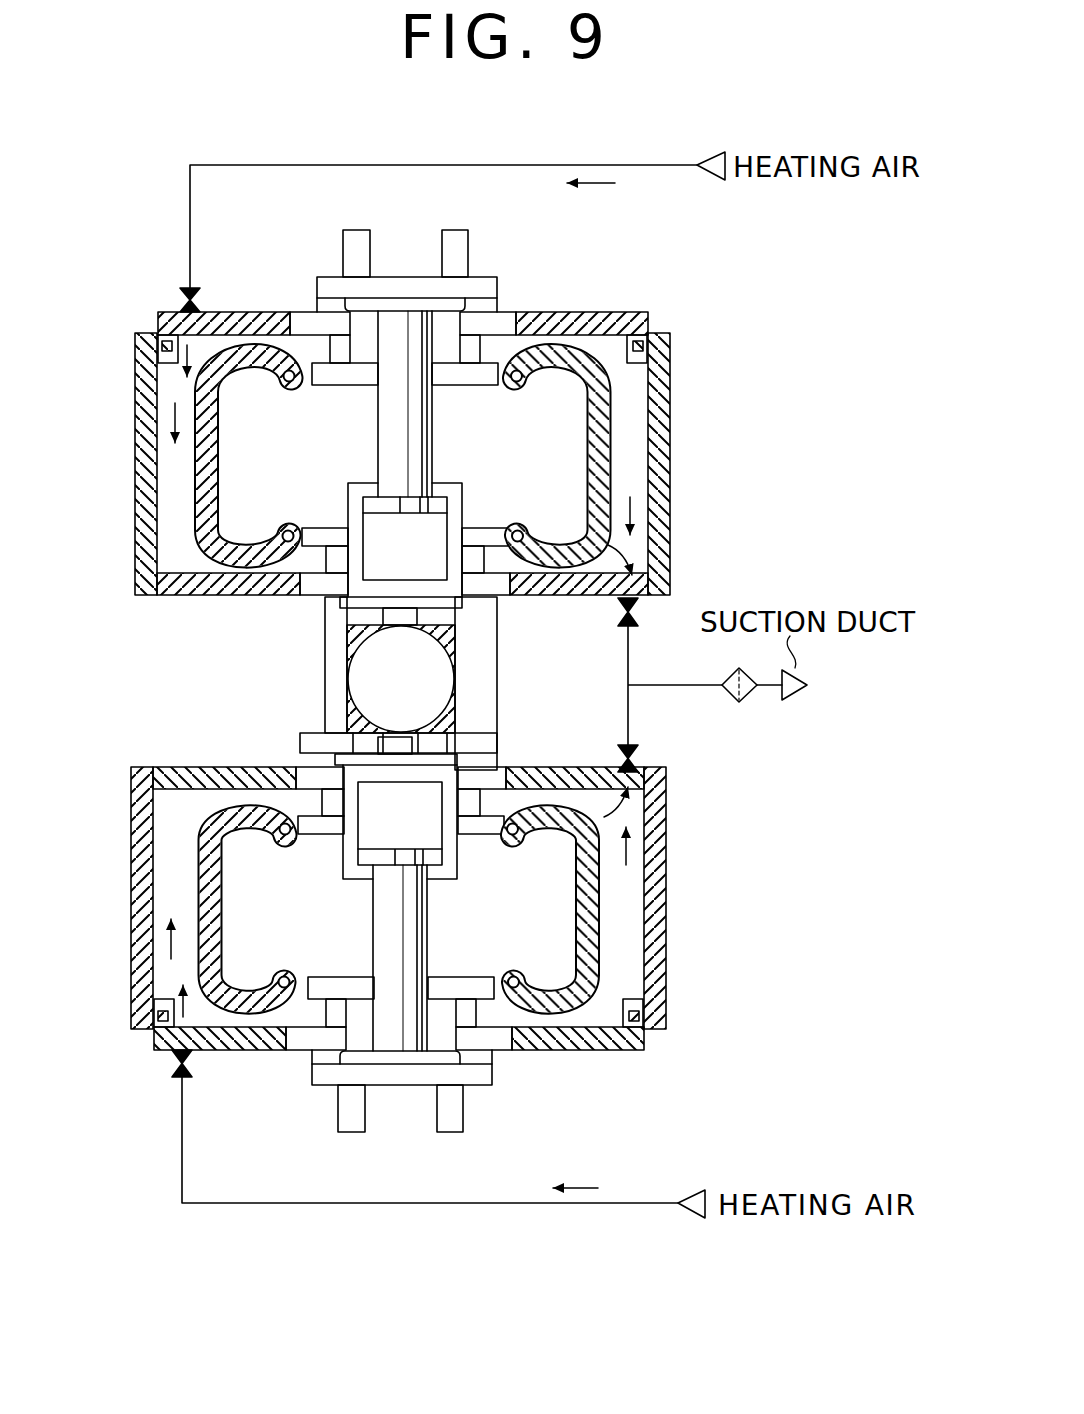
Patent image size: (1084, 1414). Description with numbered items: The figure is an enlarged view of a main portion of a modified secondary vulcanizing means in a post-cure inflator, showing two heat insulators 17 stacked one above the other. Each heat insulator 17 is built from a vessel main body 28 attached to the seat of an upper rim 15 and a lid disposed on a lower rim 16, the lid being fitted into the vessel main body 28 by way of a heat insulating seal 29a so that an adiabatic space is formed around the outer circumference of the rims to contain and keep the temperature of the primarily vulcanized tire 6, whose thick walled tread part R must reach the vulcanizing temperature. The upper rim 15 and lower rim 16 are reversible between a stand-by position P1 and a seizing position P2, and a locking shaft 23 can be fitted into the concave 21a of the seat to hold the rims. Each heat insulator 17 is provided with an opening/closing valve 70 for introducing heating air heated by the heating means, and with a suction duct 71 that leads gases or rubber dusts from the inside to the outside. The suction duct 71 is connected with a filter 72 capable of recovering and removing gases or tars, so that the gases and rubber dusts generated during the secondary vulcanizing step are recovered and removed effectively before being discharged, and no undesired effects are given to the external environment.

The opening/closing valve 70 is at (190, 290).
The lower rim 16 is at (495, 350).
The heat insulating seal 29a is at (650, 345).
The heat insulator 17 is at (672, 445).
The vessel main body 28 is at (660, 518).
The locking shaft 23 is at (385, 432).
The tread part R is at (193, 470).
The primarily vulcanized tire 6 is at (200, 543).
The upper rim 15 is at (508, 565).
The suction duct 71 is at (617, 605).
The filter 72 is at (750, 700).
The concave 21a is at (428, 803).
The stand-by position P1 is at (528, 466).
The seizing position P2 is at (528, 932).